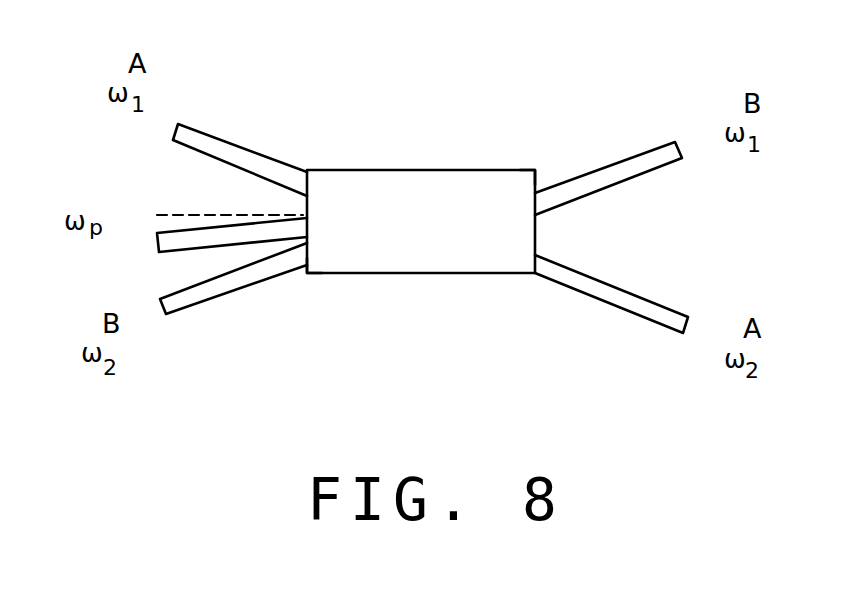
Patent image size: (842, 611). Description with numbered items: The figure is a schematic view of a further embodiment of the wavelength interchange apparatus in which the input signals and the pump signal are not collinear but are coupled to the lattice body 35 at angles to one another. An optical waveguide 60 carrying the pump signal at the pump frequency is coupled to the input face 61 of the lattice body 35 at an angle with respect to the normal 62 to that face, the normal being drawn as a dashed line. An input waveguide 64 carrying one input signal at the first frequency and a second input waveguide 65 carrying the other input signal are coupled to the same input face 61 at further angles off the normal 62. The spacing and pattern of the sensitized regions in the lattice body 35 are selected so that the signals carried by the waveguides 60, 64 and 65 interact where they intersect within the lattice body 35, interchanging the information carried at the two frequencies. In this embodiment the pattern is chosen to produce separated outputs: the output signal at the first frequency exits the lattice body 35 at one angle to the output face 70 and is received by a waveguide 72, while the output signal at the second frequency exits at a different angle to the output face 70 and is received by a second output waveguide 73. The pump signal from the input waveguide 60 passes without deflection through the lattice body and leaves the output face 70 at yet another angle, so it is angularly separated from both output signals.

The lattice body 35 is at (398, 170).
The optical waveguide 60 is at (161, 254).
The input face 61 is at (308, 272).
The normal 62 is at (187, 212).
The input waveguide 64 is at (223, 142).
The second input waveguide 65 is at (203, 303).
The output face 70 is at (537, 178).
The waveguide 72 is at (625, 160).
The second output waveguide 73 is at (608, 303).